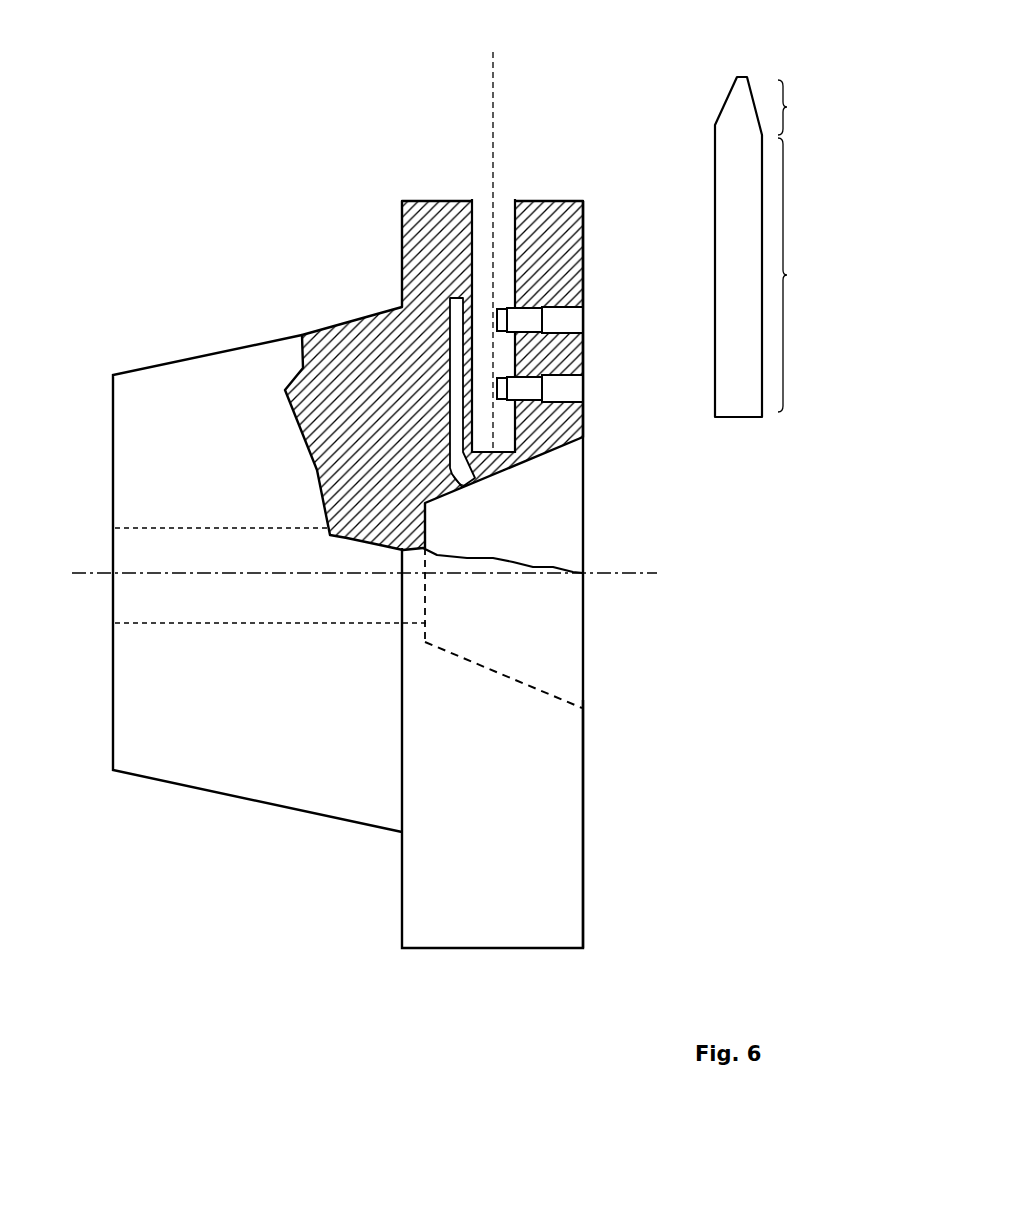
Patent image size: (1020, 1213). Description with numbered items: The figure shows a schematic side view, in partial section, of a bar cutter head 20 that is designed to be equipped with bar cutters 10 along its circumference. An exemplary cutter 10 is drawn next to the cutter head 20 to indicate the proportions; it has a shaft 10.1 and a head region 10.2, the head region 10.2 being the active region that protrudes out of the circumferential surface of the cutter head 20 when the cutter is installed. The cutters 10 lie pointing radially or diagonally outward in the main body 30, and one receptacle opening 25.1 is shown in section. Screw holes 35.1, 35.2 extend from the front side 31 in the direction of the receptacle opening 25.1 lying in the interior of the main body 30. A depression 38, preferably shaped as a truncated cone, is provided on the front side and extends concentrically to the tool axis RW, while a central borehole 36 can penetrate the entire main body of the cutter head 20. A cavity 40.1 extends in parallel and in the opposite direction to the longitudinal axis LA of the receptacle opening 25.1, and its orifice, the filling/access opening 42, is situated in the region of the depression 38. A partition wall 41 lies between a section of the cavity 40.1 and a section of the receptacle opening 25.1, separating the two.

The bar cutter 10 is at (707, 82).
The shaft 10.1 is at (811, 275).
The head region 10.2 is at (809, 107).
The cutter head 20 is at (125, 129).
The receptacle opening 25.1 is at (507, 227).
The main body 30 is at (403, 950).
The front side 31 is at (583, 758).
The screw hole 35.1 is at (562, 318).
The screw hole 35.2 is at (563, 391).
The central borehole 36 is at (133, 600).
The depression 38 is at (562, 628).
The cavity 40.1 is at (452, 395).
The partition wall 41 is at (463, 342).
The filling/access opening 42 is at (465, 482).
The longitudinal axis LA is at (481, 240).
The tool axis RW is at (382, 576).